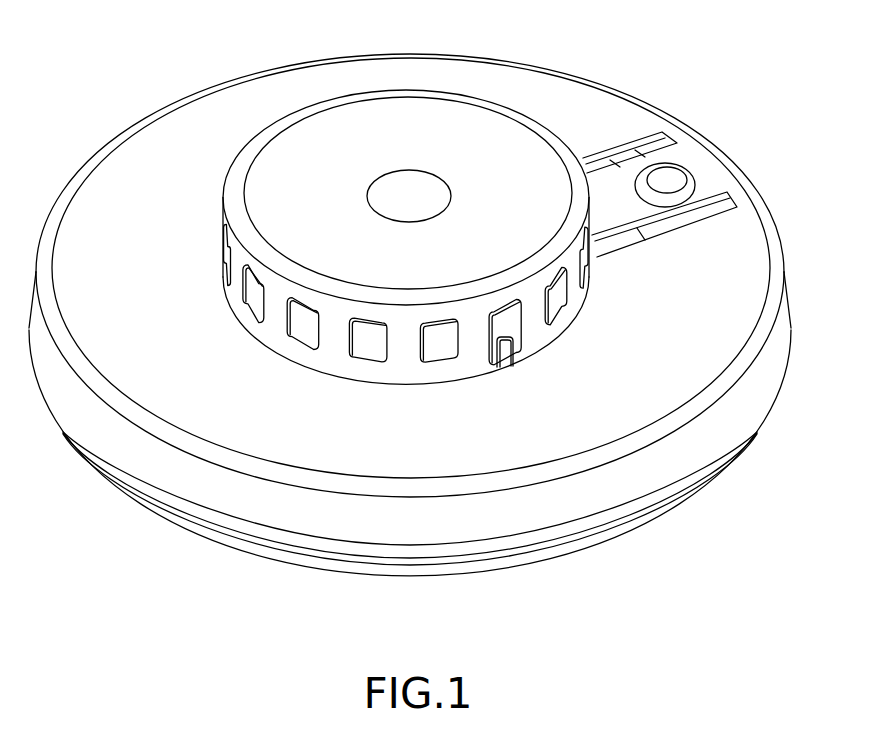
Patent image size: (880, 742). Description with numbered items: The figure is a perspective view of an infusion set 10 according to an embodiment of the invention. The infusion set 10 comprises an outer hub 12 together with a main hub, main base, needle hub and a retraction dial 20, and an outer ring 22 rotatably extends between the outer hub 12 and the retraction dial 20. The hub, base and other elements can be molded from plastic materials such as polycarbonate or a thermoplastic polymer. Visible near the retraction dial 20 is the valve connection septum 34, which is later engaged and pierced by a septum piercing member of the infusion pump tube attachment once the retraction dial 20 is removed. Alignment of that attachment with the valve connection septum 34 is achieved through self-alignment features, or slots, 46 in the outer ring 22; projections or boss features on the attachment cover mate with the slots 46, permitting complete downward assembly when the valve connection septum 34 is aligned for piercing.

The infusion set 10 is at (662, 62).
The outer hub 12 is at (172, 475).
The retraction dial 20 is at (498, 255).
The outer ring 22 is at (352, 445).
The valve connection septum 34 is at (677, 182).
The self-alignment features (slots) 46 is at (705, 222).